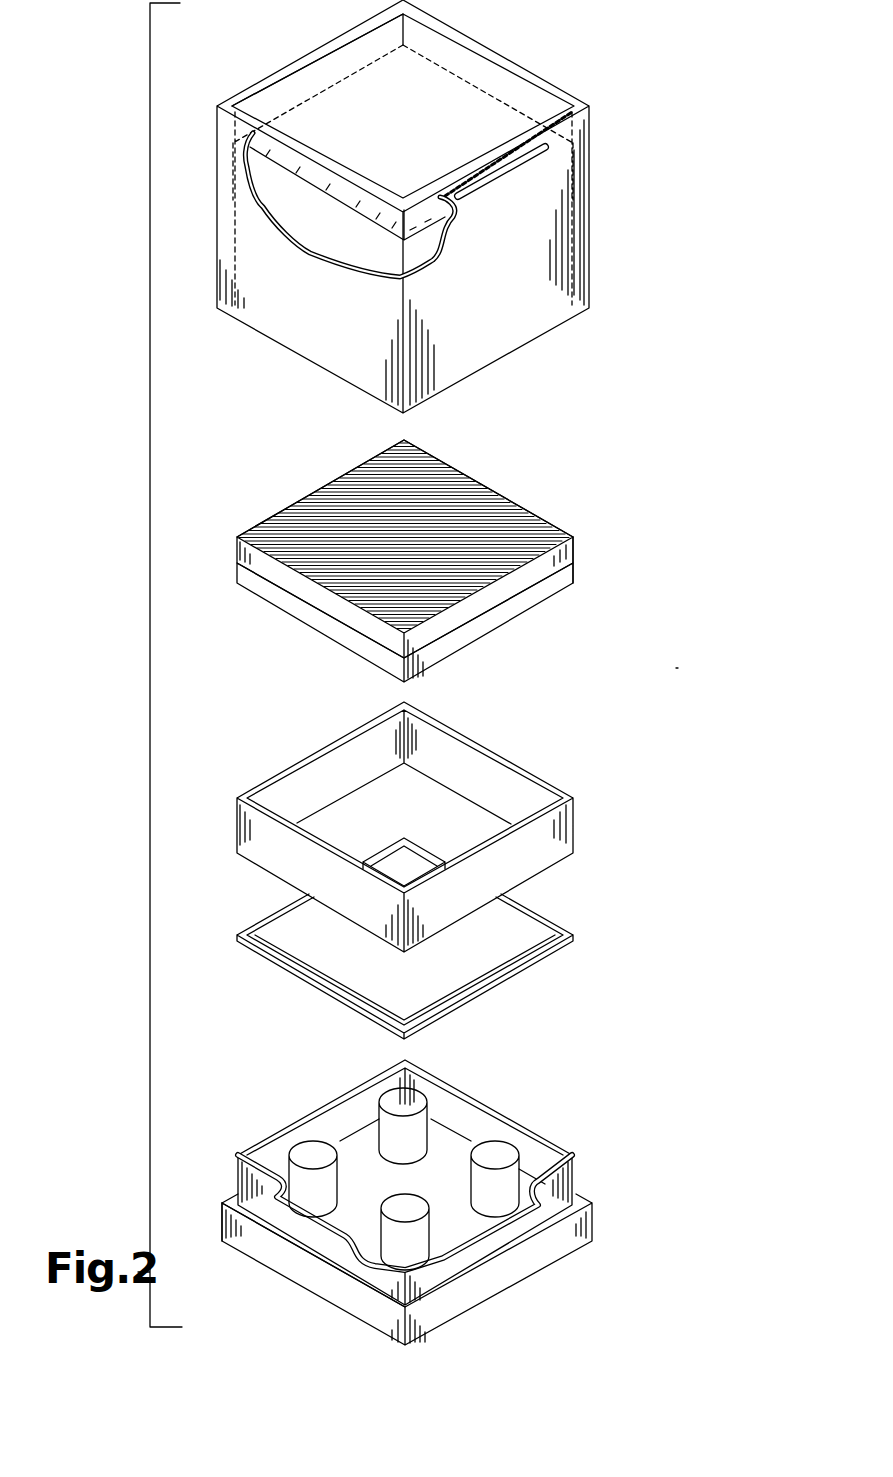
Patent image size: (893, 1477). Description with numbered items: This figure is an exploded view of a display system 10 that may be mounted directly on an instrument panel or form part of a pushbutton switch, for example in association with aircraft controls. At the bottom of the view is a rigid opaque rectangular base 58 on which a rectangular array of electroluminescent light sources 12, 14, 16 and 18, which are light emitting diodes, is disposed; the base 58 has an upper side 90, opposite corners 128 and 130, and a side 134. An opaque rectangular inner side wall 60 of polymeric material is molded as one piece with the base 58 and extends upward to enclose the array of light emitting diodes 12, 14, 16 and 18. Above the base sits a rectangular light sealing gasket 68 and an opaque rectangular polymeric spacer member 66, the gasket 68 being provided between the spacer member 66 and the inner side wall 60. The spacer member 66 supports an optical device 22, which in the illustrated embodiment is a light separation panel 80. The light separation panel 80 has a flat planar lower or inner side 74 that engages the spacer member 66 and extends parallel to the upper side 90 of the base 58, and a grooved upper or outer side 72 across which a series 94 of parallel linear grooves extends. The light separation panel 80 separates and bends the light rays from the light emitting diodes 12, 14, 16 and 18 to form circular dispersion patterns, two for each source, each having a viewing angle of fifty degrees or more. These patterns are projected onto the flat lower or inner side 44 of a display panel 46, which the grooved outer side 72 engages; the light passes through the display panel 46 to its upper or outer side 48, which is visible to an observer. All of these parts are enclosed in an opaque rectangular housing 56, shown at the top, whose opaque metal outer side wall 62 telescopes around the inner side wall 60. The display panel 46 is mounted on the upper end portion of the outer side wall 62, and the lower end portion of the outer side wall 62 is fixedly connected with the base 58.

The display system 10 is at (676, 668).
The electroluminescent light source 12 is at (313, 1152).
The electroluminescent light source 14 is at (408, 1103).
The electroluminescent light source 16 is at (495, 1155).
The electroluminescent light source 18 is at (402, 1237).
The optical device 22 is at (460, 550).
The inner side of display panel 44 is at (330, 198).
The display panel 46 is at (446, 97).
The outer side of display panel 48 is at (353, 108).
The housing 56 is at (459, 206).
The base 58 is at (441, 1198).
The inner side wall 60 is at (441, 1197).
The outer side wall 62 is at (522, 256).
The spacer member 66 is at (577, 815).
The light sealing gasket 68 is at (575, 940).
The outer side of optical device 72 is at (448, 502).
The inner side of optical device 74 is at (315, 628).
The light separation panel 80 is at (581, 548).
The upper side of base 90 is at (355, 1228).
The series of parallel linear grooves 94 is at (318, 507).
The corner of base 128 is at (222, 1212).
The corner of base 130 is at (592, 1222).
The side of base 134 is at (265, 1250).